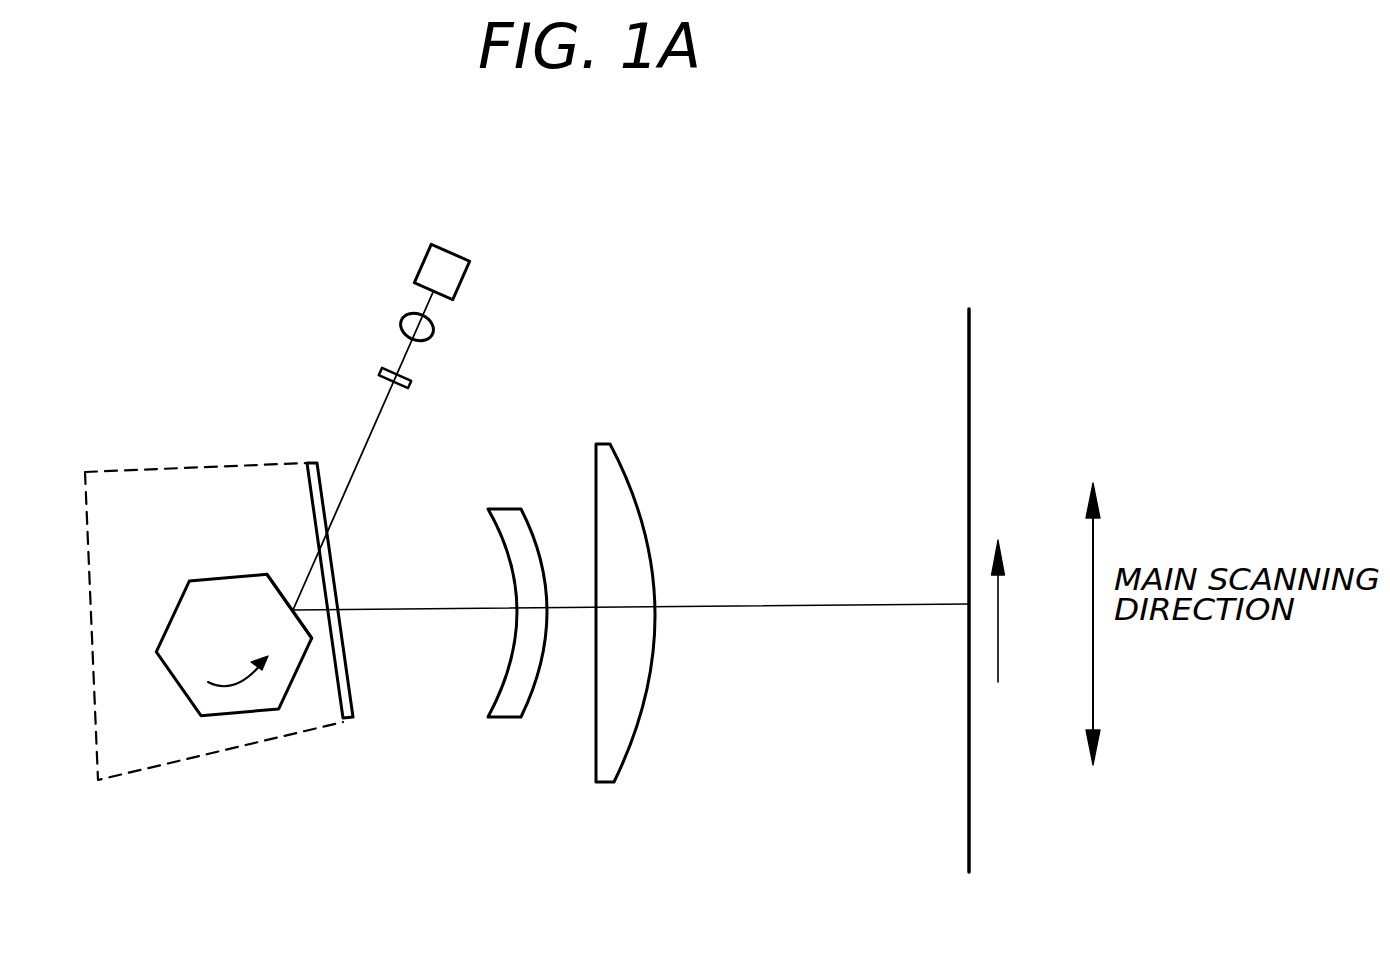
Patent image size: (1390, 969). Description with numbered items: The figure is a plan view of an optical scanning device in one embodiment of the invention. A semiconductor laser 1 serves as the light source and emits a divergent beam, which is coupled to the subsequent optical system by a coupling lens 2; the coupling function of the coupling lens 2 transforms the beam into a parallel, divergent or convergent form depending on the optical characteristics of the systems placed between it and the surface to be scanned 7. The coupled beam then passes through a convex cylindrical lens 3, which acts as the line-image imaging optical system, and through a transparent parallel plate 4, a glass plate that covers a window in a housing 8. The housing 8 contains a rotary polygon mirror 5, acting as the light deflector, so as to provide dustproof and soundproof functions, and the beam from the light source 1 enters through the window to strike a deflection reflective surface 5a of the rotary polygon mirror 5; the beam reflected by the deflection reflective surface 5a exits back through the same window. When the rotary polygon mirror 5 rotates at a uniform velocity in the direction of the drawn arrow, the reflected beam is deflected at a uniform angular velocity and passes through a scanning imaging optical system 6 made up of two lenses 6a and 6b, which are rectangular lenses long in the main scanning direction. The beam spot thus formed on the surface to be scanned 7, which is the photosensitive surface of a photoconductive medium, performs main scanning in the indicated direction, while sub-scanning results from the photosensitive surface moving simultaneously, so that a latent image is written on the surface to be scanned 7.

The semiconductor laser 1 is at (460, 272).
The coupling lens 2 is at (433, 330).
The convex cylindrical lens 3 is at (409, 383).
The transparent parallel plate 4 is at (312, 463).
The rotary polygon mirror 5 is at (207, 585).
The deflection reflective surface 5a is at (277, 576).
The scanning imaging optical system 6 is at (572, 544).
The lens 6a is at (505, 515).
The lens 6b is at (625, 573).
The surface to be scanned 7 is at (969, 402).
The housing 8 is at (158, 770).